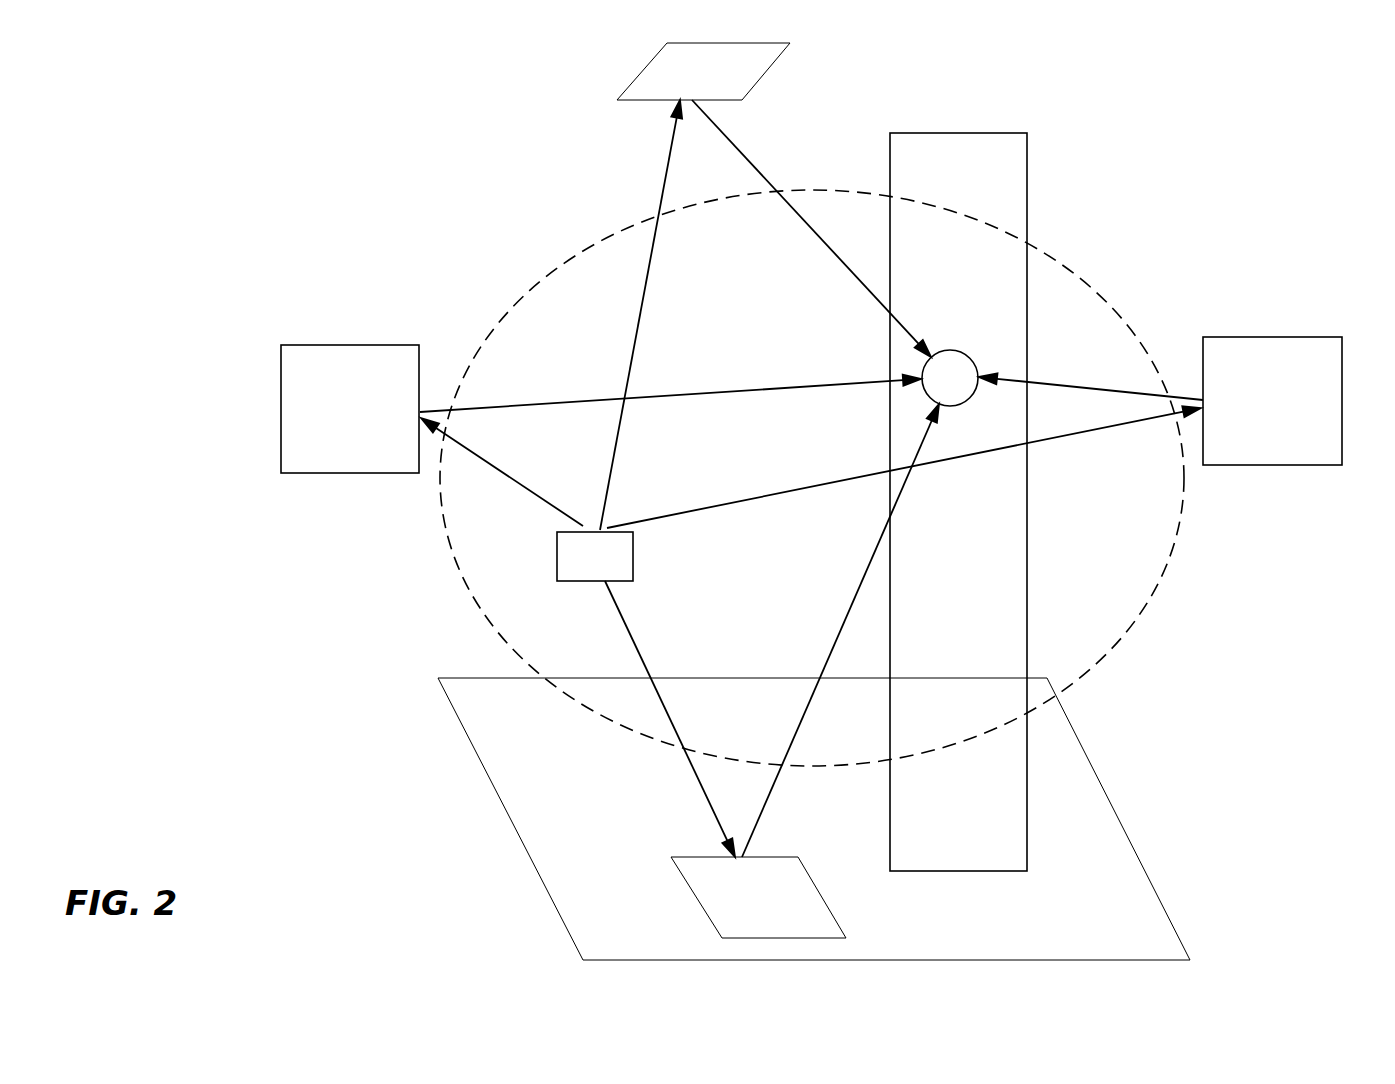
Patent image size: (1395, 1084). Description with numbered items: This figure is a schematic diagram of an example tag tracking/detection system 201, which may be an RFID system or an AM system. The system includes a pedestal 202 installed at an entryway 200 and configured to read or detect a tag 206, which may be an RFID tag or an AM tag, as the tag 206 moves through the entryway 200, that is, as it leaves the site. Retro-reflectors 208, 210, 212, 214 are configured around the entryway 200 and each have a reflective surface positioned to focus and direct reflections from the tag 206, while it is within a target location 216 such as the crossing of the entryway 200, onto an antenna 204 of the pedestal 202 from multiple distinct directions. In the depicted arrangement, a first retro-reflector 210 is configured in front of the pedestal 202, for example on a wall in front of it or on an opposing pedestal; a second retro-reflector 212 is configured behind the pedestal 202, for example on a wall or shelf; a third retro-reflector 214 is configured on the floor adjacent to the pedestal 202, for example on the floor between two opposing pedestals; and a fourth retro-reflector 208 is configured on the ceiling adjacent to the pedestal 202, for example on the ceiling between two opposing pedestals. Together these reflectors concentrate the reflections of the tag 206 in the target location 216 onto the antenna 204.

The entryway 200 is at (455, 677).
The tag tracking/detection system 201 is at (170, 98).
The pedestal 202 is at (997, 133).
The antenna 204 is at (947, 348).
The tag 206 is at (595, 556).
The fourth retro-reflector 208 is at (768, 68).
The first retro-reflector 210 is at (337, 345).
The second retro-reflector 212 is at (1285, 337).
The third retro-reflector 214 is at (832, 912).
The target location 216 is at (1072, 272).